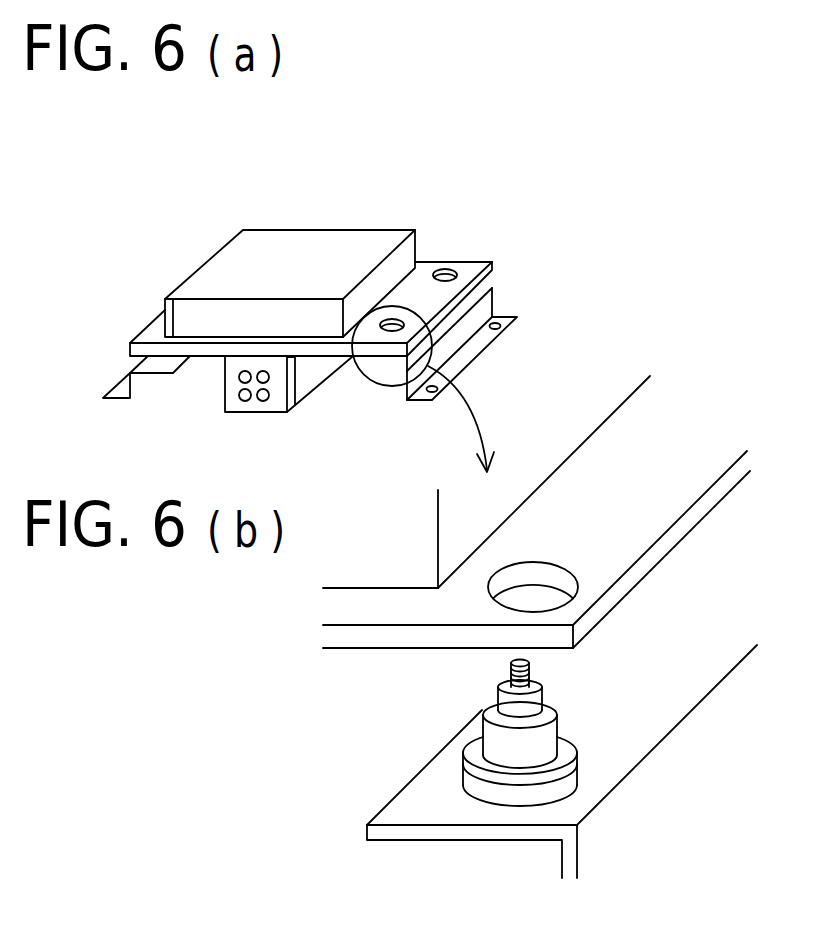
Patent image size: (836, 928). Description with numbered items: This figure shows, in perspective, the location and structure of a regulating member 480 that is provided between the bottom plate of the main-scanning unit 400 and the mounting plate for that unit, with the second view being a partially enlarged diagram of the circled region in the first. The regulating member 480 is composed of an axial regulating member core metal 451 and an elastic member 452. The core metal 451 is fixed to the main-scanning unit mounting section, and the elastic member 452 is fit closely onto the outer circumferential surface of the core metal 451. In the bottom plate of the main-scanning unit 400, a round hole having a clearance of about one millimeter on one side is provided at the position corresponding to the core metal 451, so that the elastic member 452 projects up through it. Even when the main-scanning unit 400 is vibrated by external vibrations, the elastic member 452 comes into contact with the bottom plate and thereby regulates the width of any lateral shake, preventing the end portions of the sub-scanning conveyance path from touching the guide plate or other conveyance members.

The main-scanning unit 400 is at (371, 210).
The axial regulating member core metal 451 is at (542, 681).
The elastic member 452 is at (560, 715).
The regulating member 480 is at (496, 732).